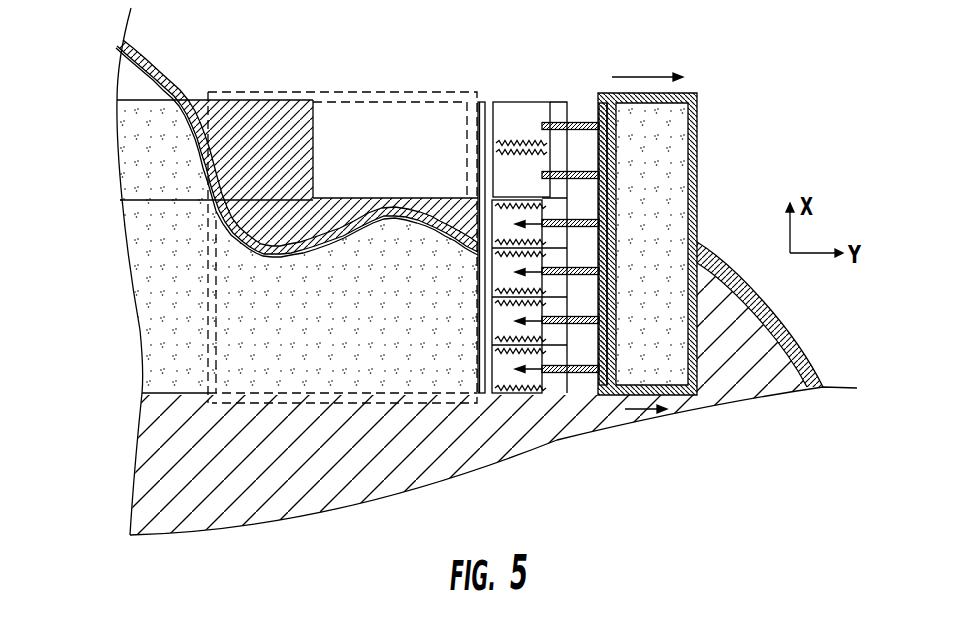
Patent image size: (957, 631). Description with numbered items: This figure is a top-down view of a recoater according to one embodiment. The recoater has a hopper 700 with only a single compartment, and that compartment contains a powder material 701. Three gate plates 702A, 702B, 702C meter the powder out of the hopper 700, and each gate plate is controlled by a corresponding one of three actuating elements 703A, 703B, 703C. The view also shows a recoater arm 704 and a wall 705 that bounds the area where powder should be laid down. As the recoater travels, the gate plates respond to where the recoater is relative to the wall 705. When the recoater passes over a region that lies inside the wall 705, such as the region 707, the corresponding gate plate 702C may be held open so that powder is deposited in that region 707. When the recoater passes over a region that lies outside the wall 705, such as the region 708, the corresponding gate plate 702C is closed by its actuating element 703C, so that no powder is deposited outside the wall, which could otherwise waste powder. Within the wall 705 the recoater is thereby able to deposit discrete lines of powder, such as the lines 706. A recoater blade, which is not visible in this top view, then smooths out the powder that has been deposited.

The hopper 700 is at (672, 259).
The powder material 701 is at (682, 150).
The gate plate 702A is at (592, 393).
The gate plate 702B is at (563, 122).
The gate plate 702C is at (594, 203).
The actuating element 703A is at (515, 393).
The actuating element 703B is at (507, 222).
The actuating element 703C is at (512, 100).
The recoater arm 704 is at (483, 393).
The wall 705 is at (163, 60).
The discrete lines of powder 706 is at (230, 316).
The region within the wall 707 is at (140, 150).
The region outside of the wall 708 is at (297, 107).